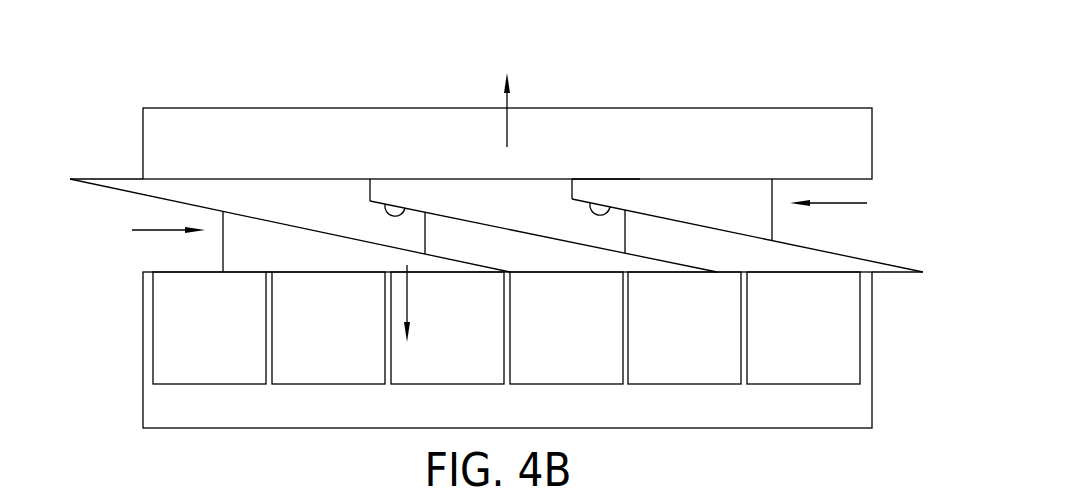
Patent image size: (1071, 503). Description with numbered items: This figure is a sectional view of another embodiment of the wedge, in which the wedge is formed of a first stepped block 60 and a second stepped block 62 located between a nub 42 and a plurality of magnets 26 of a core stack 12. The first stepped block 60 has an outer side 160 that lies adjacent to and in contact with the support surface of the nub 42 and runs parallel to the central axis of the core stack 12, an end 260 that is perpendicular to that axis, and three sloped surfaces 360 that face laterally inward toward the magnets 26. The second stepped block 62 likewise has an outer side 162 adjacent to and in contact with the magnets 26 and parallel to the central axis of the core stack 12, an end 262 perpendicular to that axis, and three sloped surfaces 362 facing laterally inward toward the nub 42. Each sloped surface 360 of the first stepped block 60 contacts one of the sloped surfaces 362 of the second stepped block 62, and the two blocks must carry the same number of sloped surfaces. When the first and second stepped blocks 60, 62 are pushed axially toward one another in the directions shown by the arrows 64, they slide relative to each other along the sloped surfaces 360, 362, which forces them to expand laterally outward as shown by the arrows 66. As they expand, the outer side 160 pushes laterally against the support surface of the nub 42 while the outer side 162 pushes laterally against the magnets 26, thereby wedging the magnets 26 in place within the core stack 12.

The core stack 12 is at (888, 357).
The plurality of magnets 26 is at (199, 339).
The nub 42 is at (339, 154).
The first stepped block 60 is at (492, 214).
The second stepped block 62 is at (492, 259).
The arrows 64 is at (140, 230).
The arrows 66 is at (508, 120).
The outer side 160 is at (595, 179).
The outer side 162 is at (293, 272).
The end 260 is at (772, 213).
The end 262 is at (222, 236).
The sloped surfaces 360 is at (138, 193).
The sloped surfaces 362 is at (257, 218).